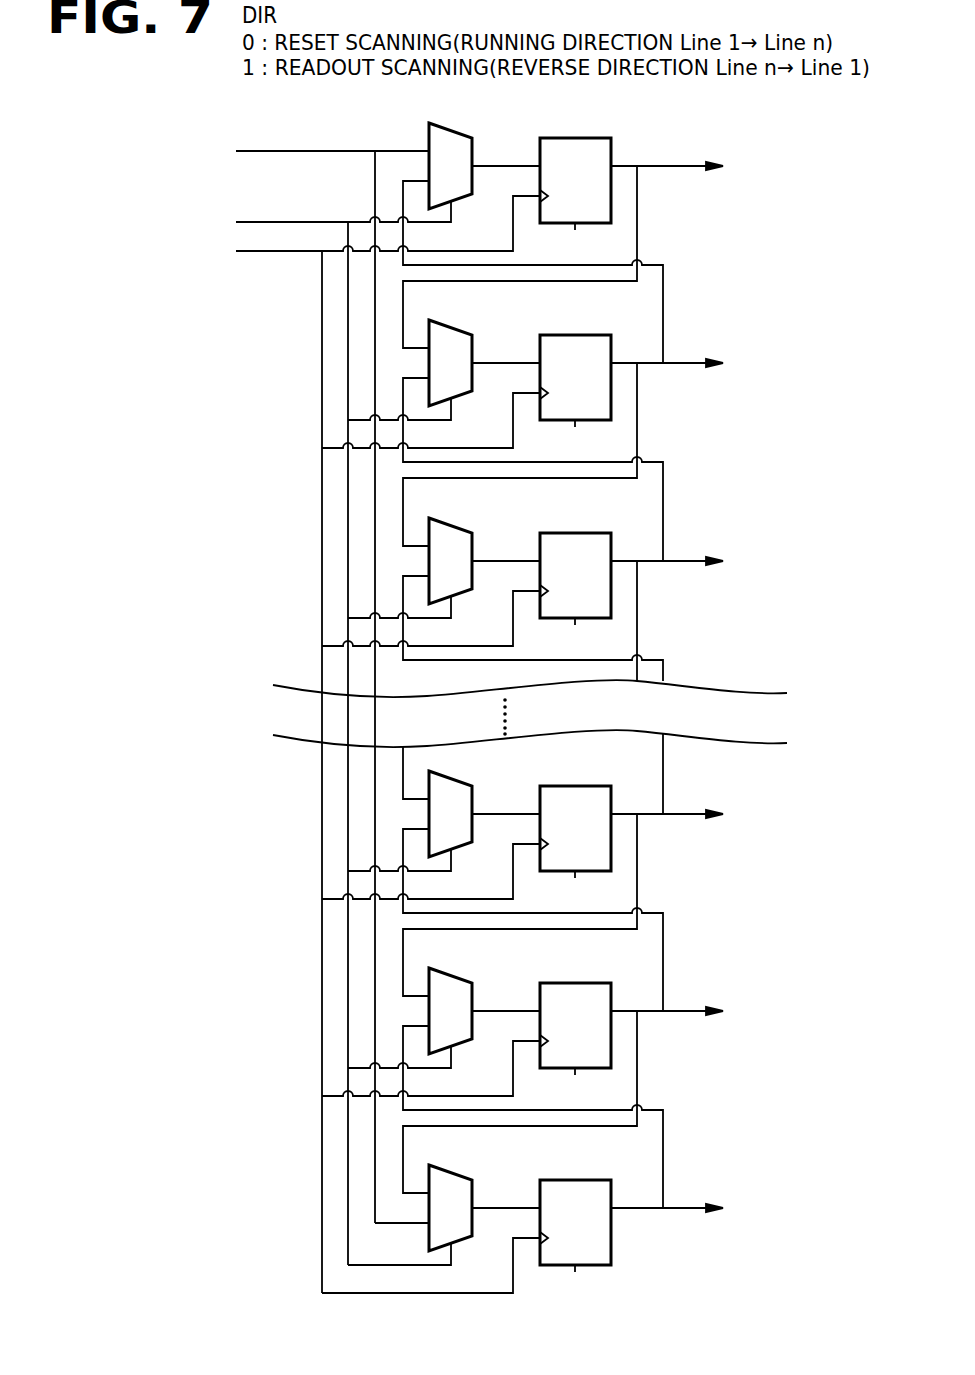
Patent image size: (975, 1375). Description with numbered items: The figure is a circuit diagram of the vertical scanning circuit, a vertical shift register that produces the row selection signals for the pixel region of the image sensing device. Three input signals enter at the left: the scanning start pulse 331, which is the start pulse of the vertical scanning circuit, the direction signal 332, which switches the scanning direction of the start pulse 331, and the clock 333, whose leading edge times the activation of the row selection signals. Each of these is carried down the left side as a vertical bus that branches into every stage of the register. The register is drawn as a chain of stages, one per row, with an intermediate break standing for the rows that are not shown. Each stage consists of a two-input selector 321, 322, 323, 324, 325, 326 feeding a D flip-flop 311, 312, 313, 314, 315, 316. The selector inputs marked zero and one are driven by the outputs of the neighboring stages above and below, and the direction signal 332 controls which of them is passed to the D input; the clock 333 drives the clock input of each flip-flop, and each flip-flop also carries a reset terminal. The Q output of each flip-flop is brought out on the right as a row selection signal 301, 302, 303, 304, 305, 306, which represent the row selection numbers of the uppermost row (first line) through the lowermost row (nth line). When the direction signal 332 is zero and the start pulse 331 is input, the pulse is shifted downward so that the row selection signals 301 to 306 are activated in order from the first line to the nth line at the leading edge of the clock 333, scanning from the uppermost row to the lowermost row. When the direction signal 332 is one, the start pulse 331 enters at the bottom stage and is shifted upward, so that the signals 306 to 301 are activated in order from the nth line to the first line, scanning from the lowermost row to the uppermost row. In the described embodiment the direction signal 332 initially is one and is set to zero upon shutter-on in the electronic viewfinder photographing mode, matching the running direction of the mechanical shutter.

The row selection signal (Line 1) 301 is at (683, 165).
The row selection signal (Line 2) 302 is at (690, 362).
The row selection signal (Line 3) 303 is at (690, 560).
The row selection signal (Line n-2) 304 is at (690, 813).
The row selection signal (Line n-1) 305 is at (690, 1010).
The row selection signal (Line n) 306 is at (690, 1207).
The D flip-flop 311 is at (594, 138).
The D flip-flop 312 is at (594, 335).
The D flip-flop 313 is at (594, 533).
The D flip-flop 314 is at (594, 786).
The D flip-flop 315 is at (594, 983).
The D flip-flop 316 is at (594, 1180).
The selector (multiplexer) 321 is at (463, 135).
The selector (multiplexer) 322 is at (463, 332).
The selector (multiplexer) 323 is at (463, 530).
The selector (multiplexer) 324 is at (465, 784).
The selector (multiplexer) 325 is at (463, 980).
The selector (multiplexer) 326 is at (463, 1177).
The scanning start pulse (PST) 331 is at (332, 145).
The DIR signal 332 is at (318, 218).
The CLK 333 is at (280, 253).